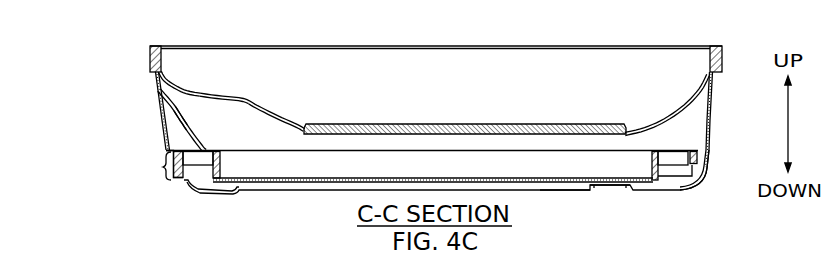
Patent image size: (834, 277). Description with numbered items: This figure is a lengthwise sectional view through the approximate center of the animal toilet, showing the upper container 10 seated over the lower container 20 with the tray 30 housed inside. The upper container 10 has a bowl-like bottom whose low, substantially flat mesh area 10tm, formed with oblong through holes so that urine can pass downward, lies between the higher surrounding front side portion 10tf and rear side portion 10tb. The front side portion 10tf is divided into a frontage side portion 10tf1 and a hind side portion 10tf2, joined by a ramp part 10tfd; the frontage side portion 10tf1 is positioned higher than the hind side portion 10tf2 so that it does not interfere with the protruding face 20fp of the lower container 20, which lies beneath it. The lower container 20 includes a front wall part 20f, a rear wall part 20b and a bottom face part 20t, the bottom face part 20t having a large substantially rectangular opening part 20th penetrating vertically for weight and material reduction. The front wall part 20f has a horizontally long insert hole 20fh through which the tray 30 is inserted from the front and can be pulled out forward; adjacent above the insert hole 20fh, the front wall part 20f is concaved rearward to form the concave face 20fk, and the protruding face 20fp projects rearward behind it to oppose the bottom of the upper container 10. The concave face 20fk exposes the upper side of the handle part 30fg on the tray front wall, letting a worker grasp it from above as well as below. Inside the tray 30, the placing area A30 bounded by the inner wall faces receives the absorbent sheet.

The upper container 10 is at (534, 45).
The frontage side portion 10tf1 is at (196, 91).
The ramp part 10tfd is at (243, 98).
The hind side portion 10tf2 is at (279, 113).
The front side portion 10tf is at (168, 68).
The mesh area 10tm is at (306, 122).
The rear side portion 10tb is at (664, 106).
The lower container 20 is at (157, 82).
The front wall part 20f is at (157, 118).
The concave face 20fk is at (181, 121).
The protruding face 20fp is at (191, 120).
The insert hole 20fh is at (150, 166).
The opening part 20th is at (560, 193).
The bottom face part 20t is at (612, 187).
The rear wall part 20b is at (712, 118).
The tray 30 is at (313, 182).
The handle part 30fg is at (179, 175).
The placing area A30 is at (640, 167).